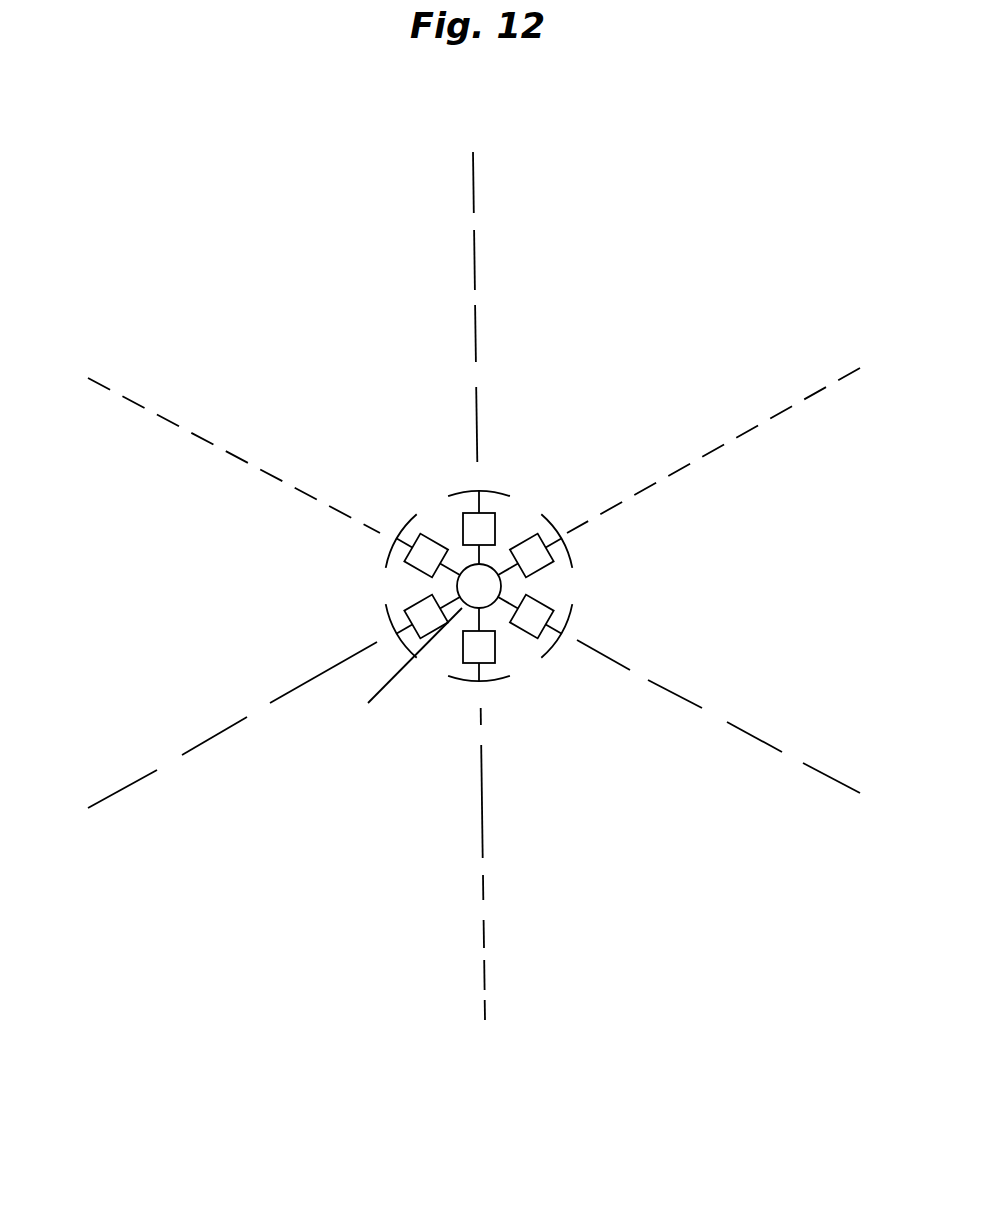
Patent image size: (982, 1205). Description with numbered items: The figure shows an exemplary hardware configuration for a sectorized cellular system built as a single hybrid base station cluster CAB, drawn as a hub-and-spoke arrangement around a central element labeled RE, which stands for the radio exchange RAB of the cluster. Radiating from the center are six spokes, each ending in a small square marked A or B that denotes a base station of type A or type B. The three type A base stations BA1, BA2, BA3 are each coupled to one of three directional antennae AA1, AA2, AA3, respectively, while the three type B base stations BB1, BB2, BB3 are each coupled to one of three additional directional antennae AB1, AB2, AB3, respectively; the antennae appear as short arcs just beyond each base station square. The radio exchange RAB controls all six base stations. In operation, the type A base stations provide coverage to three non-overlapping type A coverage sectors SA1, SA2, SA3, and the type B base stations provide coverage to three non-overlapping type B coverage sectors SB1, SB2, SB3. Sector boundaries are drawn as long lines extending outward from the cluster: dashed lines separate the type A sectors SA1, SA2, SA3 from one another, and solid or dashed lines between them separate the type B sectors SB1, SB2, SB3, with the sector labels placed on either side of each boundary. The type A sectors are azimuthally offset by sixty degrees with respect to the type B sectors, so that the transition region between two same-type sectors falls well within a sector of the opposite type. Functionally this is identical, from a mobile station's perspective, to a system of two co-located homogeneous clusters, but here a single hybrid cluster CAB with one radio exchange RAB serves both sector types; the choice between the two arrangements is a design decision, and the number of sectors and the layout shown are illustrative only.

The base station cluster CAB is at (246, 226).
The radio equipment RE is at (479, 586).
The antenna A unit A is at (478, 575).
The antenna B unit B is at (478, 598).
The radio exchange RAB is at (383, 667).
The directional antenna AA1 is at (452, 482).
The type A base station BA1 is at (498, 514).
The type B base station BB1 is at (530, 532).
The directional antenna AB1 is at (578, 547).
The type A base station BA2 is at (548, 598).
The directional antenna AA2 is at (573, 620).
The type B base station BB2 is at (453, 657).
The directional antenna AB2 is at (490, 688).
The type A base station BA3 is at (402, 603).
The directional antenna AA3 is at (380, 631).
The type B base station BB3 is at (430, 522).
The directional antenna AB3 is at (380, 545).
The type A coverage sector SA1 is at (450, 441).
The type A coverage sector SA2 is at (678, 680).
The type A coverage sector SA3 is at (293, 718).
The type B coverage sector SB1 is at (660, 449).
The type B coverage sector SB2 is at (489, 735).
The type B coverage sector SB3 is at (274, 496).